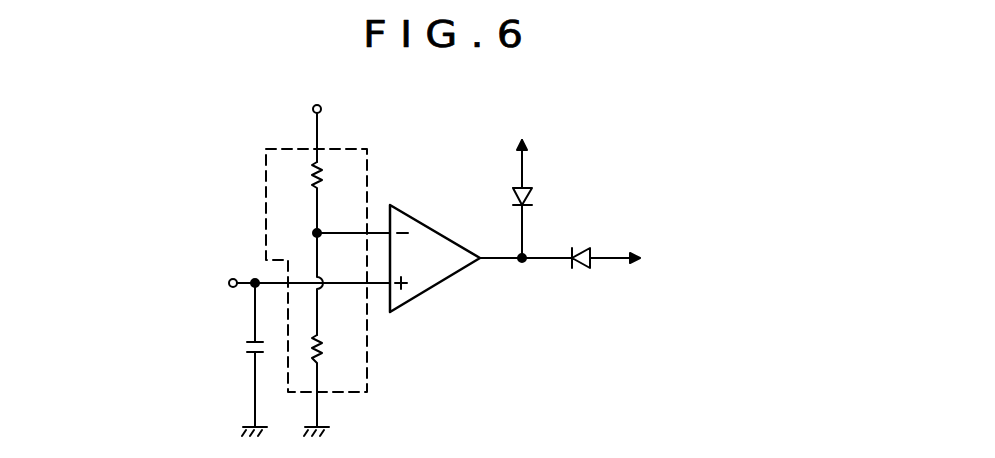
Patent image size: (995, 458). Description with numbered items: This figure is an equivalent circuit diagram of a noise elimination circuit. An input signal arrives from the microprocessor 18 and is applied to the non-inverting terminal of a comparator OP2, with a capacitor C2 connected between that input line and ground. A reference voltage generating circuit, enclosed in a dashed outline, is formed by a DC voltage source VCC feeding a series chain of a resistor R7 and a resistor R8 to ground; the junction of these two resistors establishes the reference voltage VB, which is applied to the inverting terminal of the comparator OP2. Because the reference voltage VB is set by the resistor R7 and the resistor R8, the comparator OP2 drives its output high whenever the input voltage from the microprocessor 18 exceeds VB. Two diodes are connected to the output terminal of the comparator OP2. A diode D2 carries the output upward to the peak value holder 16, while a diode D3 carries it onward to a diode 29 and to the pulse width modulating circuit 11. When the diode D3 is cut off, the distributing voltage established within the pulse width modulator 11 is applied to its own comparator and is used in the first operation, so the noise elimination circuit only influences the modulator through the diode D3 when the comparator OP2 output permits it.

The reference voltage VB is at (283, 149).
The DC voltage source VCC is at (341, 127).
The resistor R7 is at (334, 197).
The resistor R8 is at (330, 385).
The capacitor C2 is at (240, 359).
The comparator OP2 is at (433, 287).
The diode D2 is at (542, 199).
The diode D3 is at (602, 273).
The peak value holder 16 is at (690, 148).
The microprocessor 18 is at (214, 269).
The diode 29 is at (706, 256).
The pulse width modulator 11 is at (735, 307).